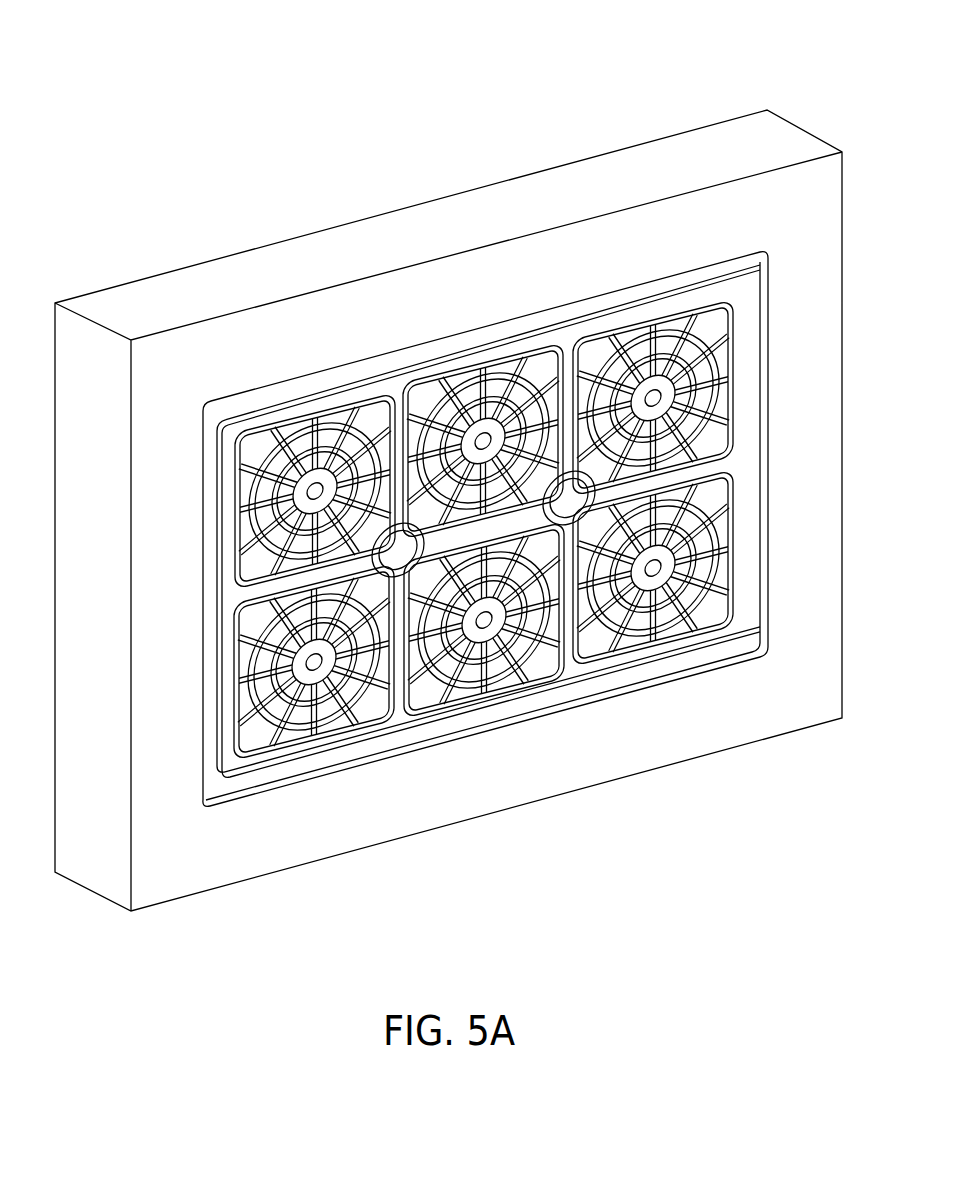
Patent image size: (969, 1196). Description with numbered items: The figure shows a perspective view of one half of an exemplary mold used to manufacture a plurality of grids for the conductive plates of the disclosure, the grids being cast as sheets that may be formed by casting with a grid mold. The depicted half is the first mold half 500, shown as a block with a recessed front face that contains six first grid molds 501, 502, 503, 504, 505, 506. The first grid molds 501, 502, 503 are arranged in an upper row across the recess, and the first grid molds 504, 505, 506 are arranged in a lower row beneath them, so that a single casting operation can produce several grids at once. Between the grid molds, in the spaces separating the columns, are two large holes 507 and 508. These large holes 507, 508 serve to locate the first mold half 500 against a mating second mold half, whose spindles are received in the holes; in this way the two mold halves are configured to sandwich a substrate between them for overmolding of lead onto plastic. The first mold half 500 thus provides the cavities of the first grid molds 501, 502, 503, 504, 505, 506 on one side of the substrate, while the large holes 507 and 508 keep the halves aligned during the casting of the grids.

The first mold half 500 is at (794, 82).
The first grid mold 501 is at (262, 428).
The first grid mold 502 is at (507, 363).
The first grid mold 503 is at (712, 336).
The first grid mold 504 is at (660, 622).
The first grid mold 505 is at (545, 677).
The first grid mold 506 is at (345, 716).
The large hole 507 is at (397, 535).
The large hole 508 is at (570, 478).